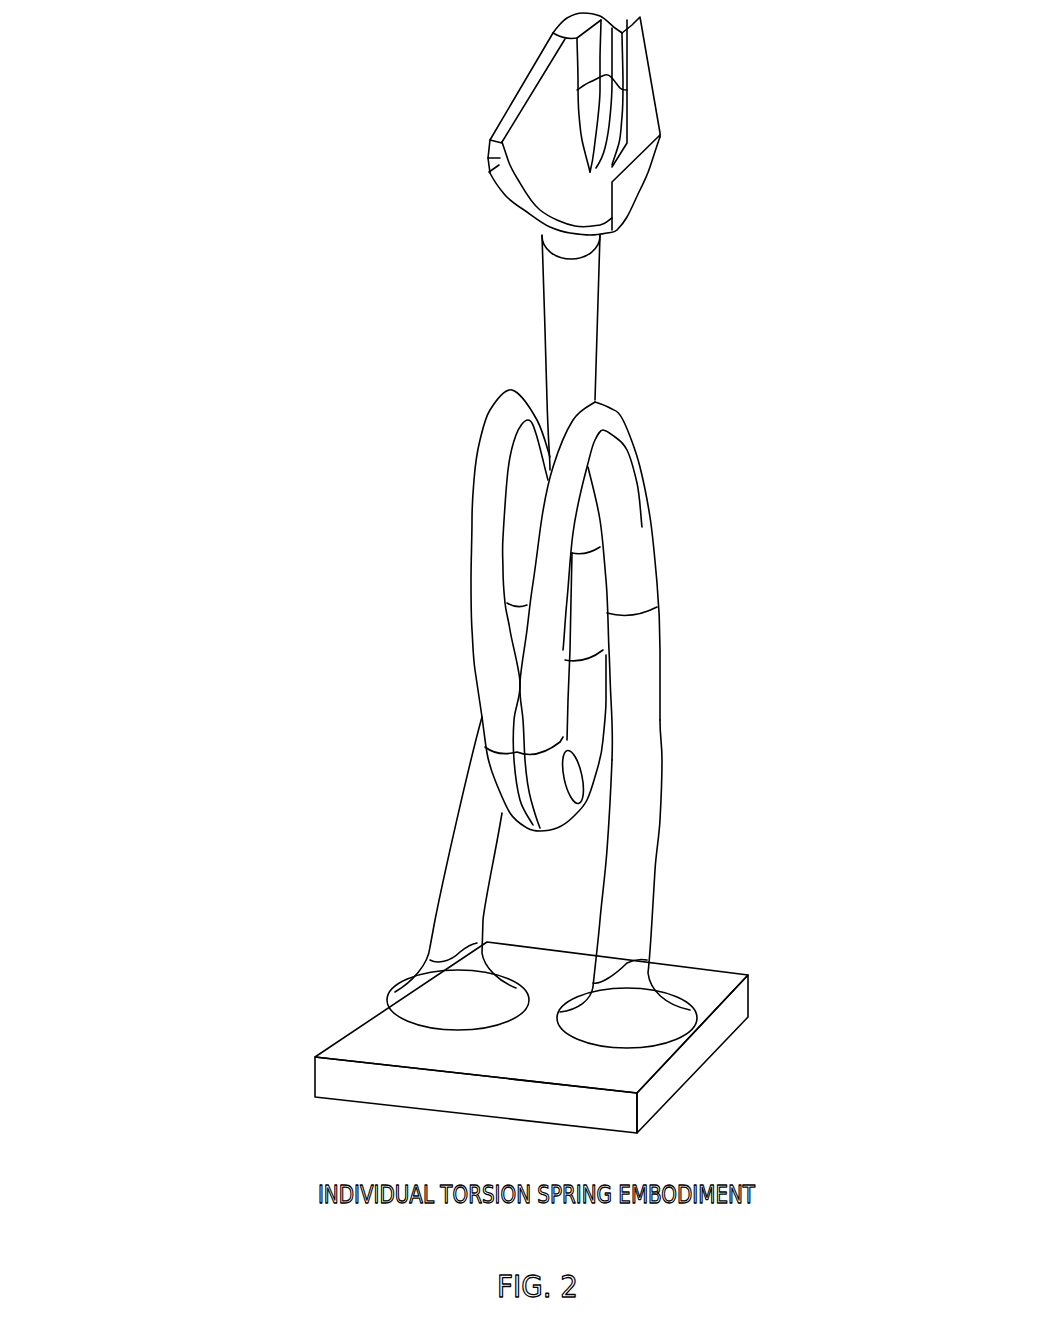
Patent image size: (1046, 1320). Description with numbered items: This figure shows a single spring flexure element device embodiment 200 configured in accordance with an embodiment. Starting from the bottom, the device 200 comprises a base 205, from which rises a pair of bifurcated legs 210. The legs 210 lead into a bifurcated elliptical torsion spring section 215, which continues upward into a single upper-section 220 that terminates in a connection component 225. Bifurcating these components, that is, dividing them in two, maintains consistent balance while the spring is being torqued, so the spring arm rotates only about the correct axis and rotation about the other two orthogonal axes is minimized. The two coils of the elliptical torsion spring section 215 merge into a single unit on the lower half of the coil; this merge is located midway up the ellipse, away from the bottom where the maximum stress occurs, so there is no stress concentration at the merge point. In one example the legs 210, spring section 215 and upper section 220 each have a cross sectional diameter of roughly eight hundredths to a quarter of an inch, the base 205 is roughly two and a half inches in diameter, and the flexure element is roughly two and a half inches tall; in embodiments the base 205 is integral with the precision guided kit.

The device embodiment 200 is at (205, 53).
The base 205 is at (296, 1083).
The bifurcated legs 210 is at (285, 822).
The bifurcated elliptical torsion spring section 215 is at (360, 825).
The single upper section 220 is at (358, 392).
The connection component 225 is at (685, 227).